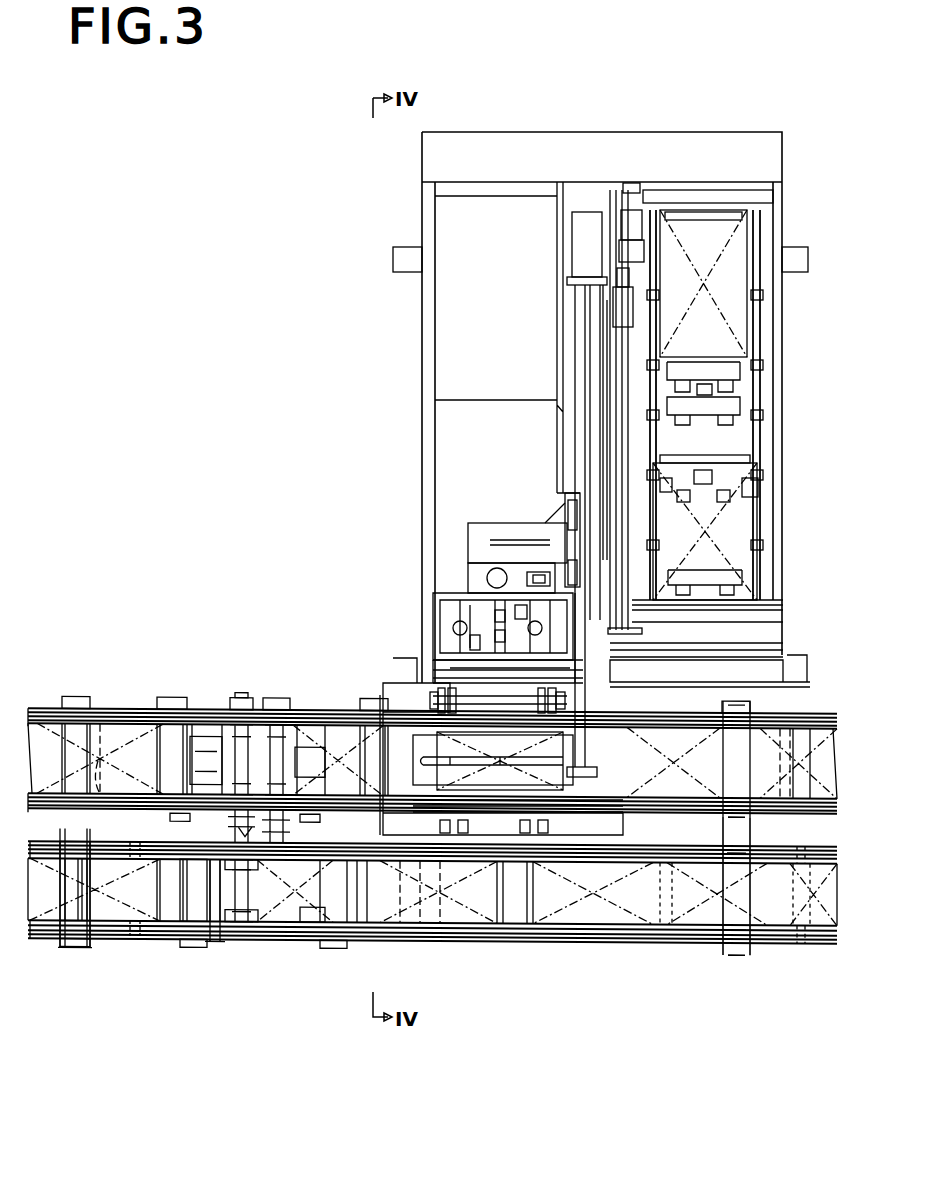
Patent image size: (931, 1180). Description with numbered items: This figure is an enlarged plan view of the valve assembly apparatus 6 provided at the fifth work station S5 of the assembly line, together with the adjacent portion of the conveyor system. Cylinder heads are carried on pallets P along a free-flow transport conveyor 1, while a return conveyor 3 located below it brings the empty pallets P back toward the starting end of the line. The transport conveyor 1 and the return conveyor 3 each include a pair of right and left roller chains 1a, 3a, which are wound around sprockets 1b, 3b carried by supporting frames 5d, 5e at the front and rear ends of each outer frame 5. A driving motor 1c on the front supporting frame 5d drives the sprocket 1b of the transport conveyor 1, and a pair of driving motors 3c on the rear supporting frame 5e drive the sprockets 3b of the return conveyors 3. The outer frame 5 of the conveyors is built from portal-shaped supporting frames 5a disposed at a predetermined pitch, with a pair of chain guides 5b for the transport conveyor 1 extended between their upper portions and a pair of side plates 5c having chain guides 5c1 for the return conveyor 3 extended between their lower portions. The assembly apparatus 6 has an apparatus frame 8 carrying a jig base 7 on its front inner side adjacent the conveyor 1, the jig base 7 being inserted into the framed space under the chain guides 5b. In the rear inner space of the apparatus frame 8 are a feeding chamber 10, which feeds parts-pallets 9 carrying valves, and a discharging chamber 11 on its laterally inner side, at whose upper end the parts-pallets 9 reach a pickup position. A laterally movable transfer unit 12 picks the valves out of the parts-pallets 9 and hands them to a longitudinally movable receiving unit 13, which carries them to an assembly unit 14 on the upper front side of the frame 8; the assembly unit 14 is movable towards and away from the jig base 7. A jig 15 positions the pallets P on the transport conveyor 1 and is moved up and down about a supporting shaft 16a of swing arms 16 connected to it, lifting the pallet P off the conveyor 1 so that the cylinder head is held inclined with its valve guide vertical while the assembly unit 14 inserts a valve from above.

The free-flow transport conveyor 1 is at (772, 742).
The roller chains 1a is at (243, 715).
The sprocket 1b is at (280, 742).
The driving motor 1c is at (318, 735).
The return conveyor 3 is at (778, 905).
The roller chains 3a is at (250, 935).
The sprockets 3b is at (232, 862).
The driving motors 3c is at (200, 780).
The outer frame 5 is at (752, 948).
The portal-shaped supporting frames 5a is at (62, 936).
The chain guides 5b is at (45, 712).
The side plates 5c is at (52, 846).
The chain guides 5c1 is at (818, 958).
The supporting frame 5d is at (305, 942).
The supporting frame 5e is at (217, 940).
The valve assembly apparatus 6 is at (800, 206).
The jig base 7 is at (383, 690).
The apparatus frame 8 is at (428, 216).
The parts-pallets 9 is at (722, 296).
The feeding chamber 10 is at (740, 331).
The discharging chamber 11 is at (735, 545).
The transfer unit 12 is at (742, 490).
The receiving unit 13 is at (445, 645).
The assembly unit 14 is at (467, 612).
The jig 15 is at (550, 776).
The swing arms 16 is at (475, 700).
The supporting shaft 16a is at (440, 657).
The pallets P is at (100, 732).
The fifth work station S5 is at (608, 97).